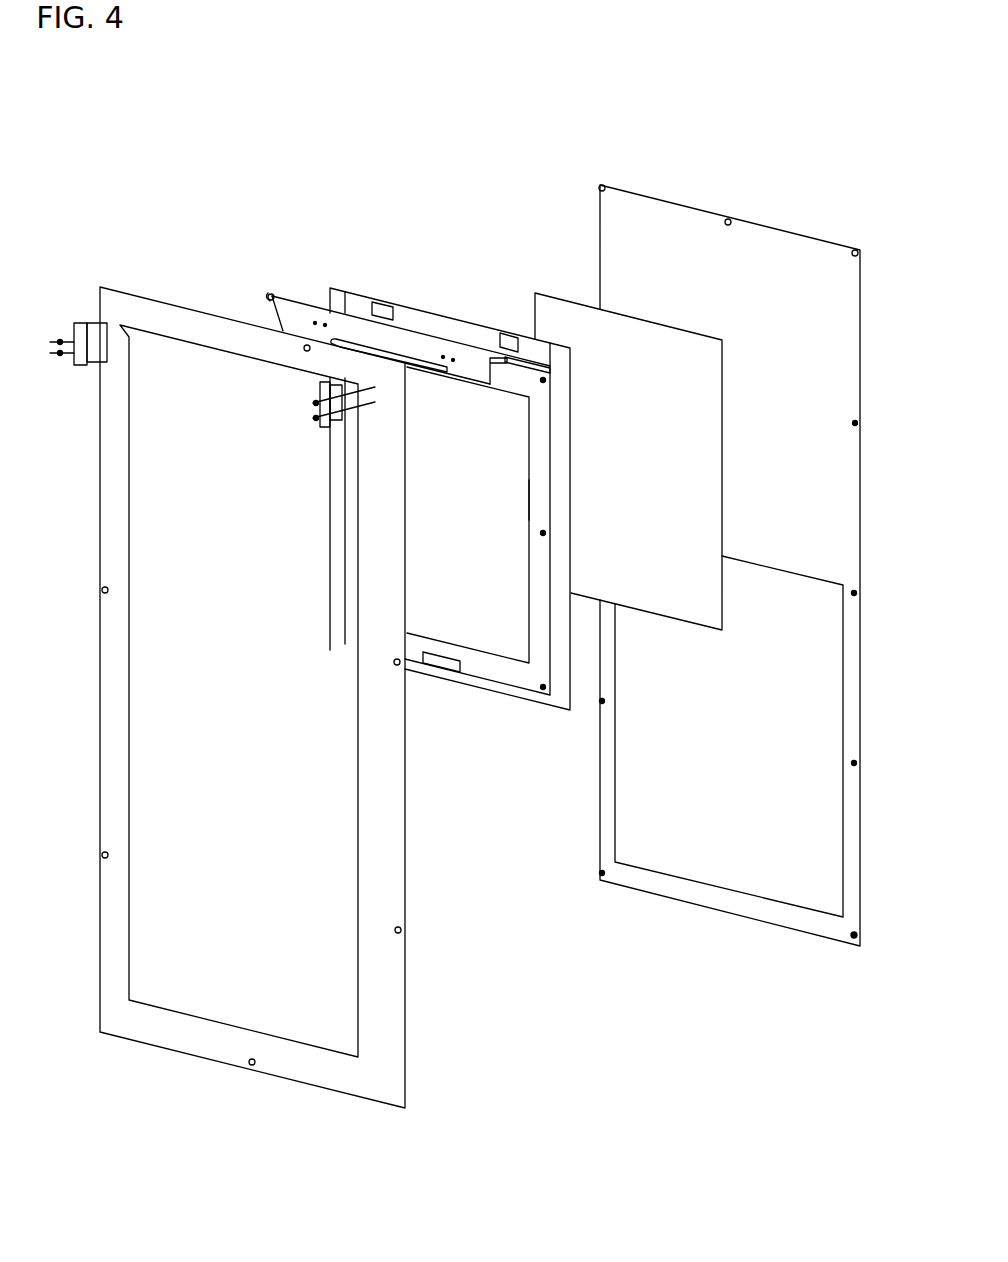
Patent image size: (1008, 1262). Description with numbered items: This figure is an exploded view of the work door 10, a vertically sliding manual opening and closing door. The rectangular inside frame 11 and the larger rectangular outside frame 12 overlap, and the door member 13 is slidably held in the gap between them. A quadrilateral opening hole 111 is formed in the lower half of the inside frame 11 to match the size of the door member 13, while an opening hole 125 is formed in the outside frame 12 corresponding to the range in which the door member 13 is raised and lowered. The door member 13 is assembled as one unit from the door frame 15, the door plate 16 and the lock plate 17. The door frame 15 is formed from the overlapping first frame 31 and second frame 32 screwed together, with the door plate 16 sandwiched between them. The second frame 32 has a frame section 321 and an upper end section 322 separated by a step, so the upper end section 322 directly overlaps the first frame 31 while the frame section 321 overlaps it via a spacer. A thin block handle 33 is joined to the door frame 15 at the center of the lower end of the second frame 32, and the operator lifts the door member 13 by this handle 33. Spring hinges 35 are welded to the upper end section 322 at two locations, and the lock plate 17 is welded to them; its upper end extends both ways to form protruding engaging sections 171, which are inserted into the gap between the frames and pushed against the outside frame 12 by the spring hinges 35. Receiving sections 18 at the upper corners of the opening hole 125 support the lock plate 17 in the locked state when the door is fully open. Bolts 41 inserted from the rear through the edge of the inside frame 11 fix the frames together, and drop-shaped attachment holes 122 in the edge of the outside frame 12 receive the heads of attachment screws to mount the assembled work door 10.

The work door 10 is at (395, 102).
The inside frame 11 is at (728, 222).
The opening hole 111 is at (757, 772).
The outside frame 12 is at (190, 327).
The attachment holes 122 is at (405, 927).
The opening hole 125 is at (252, 881).
The door member 13 is at (318, 193).
The door frame 15 is at (440, 334).
The door plate 16 is at (560, 313).
The lock plate 17 is at (360, 332).
The engaging sections 171 is at (270, 293).
The receiving section 18 is at (72, 323).
The first frame 31 is at (560, 712).
The second frame 32 is at (493, 693).
The frame section 321 is at (538, 498).
The upper end section 322 is at (538, 357).
The handle 33 is at (430, 673).
The spring hinge 35 is at (388, 302).
The bolts 41 is at (853, 935).